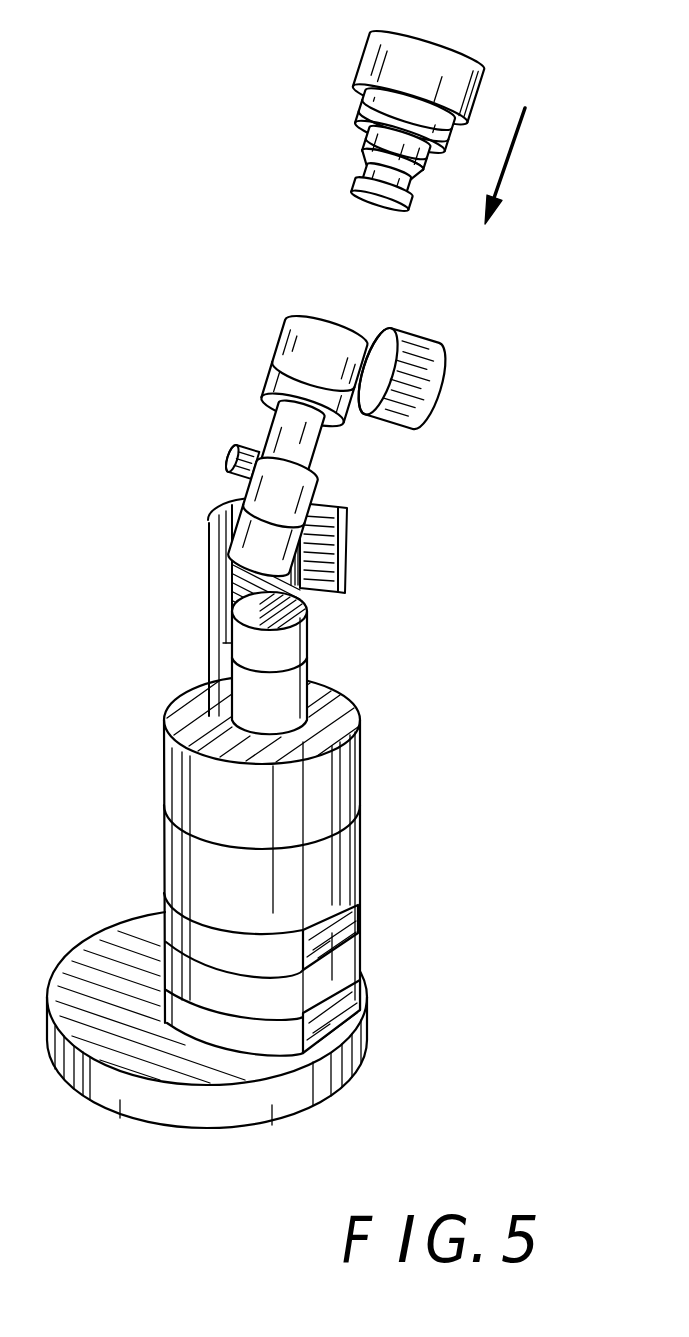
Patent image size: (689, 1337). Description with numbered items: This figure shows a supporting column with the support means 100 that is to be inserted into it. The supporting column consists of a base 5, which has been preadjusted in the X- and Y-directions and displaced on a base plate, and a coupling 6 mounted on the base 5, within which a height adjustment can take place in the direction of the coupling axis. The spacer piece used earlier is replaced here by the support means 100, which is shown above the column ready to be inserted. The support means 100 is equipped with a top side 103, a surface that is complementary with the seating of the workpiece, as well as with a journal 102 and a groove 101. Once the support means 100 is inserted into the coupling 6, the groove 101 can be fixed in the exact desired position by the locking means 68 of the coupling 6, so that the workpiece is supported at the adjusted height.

The base 5 is at (388, 1029).
The coupling 6 is at (357, 495).
The locking means 68 is at (408, 378).
The support means 100 is at (388, 141).
The groove 101 is at (354, 178).
The journal 102 is at (370, 136).
The top side 103 is at (434, 46).